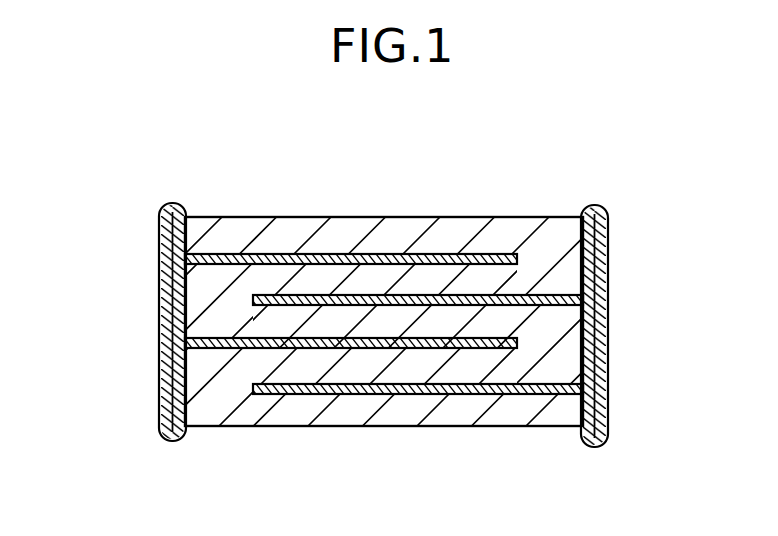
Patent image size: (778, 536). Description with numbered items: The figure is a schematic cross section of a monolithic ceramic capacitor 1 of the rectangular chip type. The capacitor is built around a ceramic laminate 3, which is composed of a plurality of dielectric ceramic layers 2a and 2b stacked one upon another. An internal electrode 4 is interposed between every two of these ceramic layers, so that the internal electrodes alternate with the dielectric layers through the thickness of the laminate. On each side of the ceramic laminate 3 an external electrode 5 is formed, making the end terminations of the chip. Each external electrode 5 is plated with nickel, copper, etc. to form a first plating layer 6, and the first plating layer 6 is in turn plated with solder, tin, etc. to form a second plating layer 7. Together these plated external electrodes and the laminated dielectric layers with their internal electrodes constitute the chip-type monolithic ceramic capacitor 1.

The monolithic ceramic capacitor 1 is at (166, 176).
The dielectric ceramic layer 2a is at (430, 236).
The dielectric ceramic layer 2b is at (485, 283).
The ceramic laminate 3 is at (316, 206).
The internal electrode 4 is at (236, 254).
The external electrode 5 is at (160, 250).
The first plating layer 6 is at (160, 315).
The second plating layer 7 is at (158, 378).